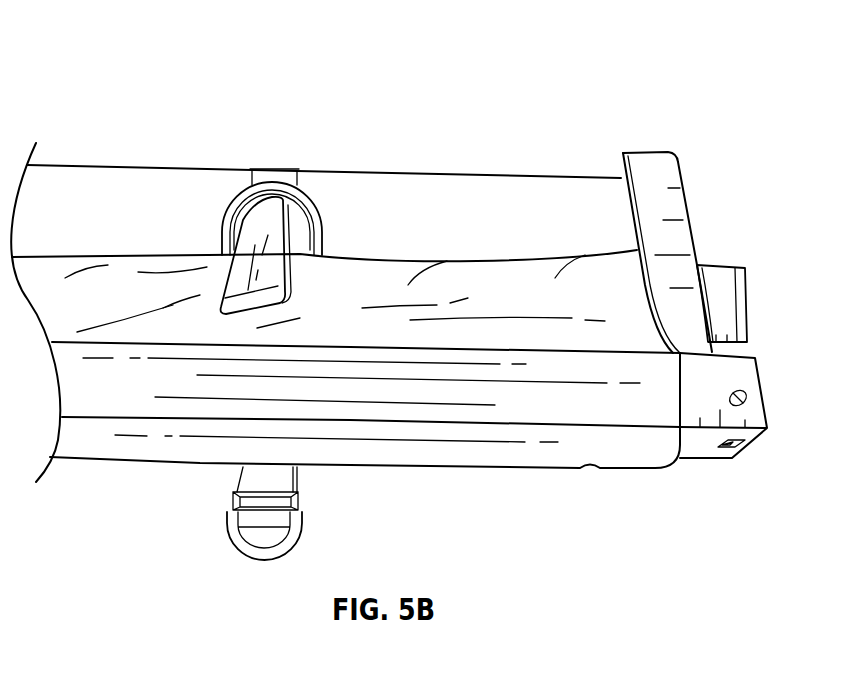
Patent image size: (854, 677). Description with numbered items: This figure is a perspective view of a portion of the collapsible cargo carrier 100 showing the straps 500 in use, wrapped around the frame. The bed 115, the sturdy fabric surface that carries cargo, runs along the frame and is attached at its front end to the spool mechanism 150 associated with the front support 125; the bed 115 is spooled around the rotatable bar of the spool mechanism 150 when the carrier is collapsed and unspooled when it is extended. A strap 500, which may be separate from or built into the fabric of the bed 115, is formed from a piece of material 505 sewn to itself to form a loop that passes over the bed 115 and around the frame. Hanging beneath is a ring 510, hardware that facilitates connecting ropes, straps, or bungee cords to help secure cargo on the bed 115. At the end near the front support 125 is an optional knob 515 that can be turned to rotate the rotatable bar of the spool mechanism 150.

The collapsible cargo carrier 100 is at (421, 289).
The bed 115 is at (515, 195).
The front support 125 is at (708, 447).
The spool mechanism 150 is at (727, 252).
The strap 500 is at (333, 321).
The piece of material 505 is at (265, 170).
The ring 510 is at (296, 520).
The knob 515 is at (748, 298).